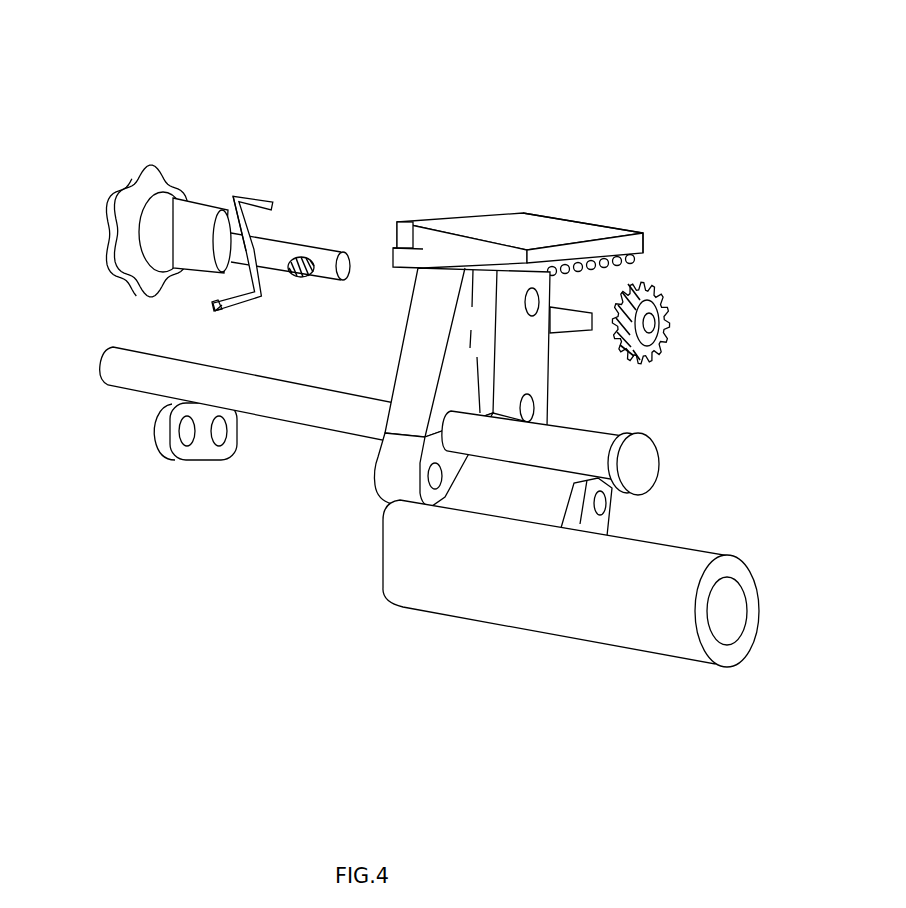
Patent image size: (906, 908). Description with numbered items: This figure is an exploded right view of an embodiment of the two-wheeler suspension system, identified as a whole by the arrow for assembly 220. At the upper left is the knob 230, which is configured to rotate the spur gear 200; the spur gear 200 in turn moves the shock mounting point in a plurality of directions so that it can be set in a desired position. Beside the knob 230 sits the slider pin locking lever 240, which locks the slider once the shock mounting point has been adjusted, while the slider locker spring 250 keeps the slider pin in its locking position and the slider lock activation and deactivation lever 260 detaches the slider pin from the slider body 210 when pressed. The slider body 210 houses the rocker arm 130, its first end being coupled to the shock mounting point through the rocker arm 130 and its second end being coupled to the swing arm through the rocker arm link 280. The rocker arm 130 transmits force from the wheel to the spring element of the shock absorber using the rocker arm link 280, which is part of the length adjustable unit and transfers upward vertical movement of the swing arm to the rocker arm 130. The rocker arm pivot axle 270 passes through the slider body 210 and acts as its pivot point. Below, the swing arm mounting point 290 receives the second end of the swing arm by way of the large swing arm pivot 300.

The drive assembly 220 is at (571, 61).
The knob 230 is at (121, 197).
The slider pin locking lever 240 is at (243, 198).
The slider lock activation and deactivation lever 260 is at (214, 304).
The slider locker spring 250 is at (299, 280).
The rocker arm 130 is at (394, 368).
The slider body 210 is at (645, 234).
The spur gear 200 is at (671, 341).
The rocker arm pivot axle 270 is at (282, 418).
The rocker arm link 280 is at (200, 461).
The swing arm mounting point 290 is at (617, 519).
The swing arm pivot 300 is at (458, 623).